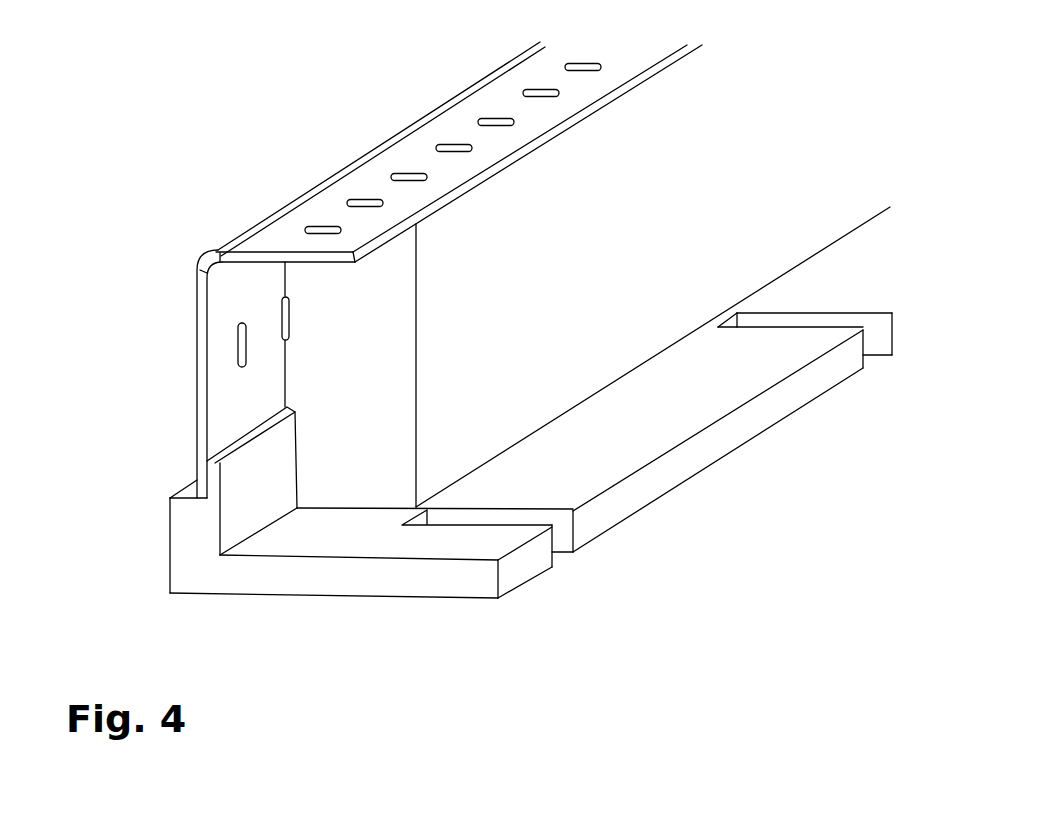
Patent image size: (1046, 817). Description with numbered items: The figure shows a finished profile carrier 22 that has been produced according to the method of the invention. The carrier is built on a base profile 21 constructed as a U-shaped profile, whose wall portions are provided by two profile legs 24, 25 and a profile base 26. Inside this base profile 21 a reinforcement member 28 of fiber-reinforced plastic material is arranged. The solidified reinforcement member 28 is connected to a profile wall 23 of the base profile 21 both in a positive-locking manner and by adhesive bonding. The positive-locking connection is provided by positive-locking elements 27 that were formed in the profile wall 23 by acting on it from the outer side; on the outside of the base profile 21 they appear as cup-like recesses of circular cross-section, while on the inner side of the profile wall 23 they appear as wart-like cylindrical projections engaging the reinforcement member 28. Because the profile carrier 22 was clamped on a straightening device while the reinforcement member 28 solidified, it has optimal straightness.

The base profile 21 is at (806, 424).
The profile carrier 22 is at (388, 116).
The profile wall 23 is at (313, 195).
The profile leg 24 is at (692, 467).
The profile leg 25 is at (497, 88).
The profile base 26 is at (205, 418).
The positive-locking elements 27 is at (238, 345).
The reinforcement member 28 is at (533, 320).